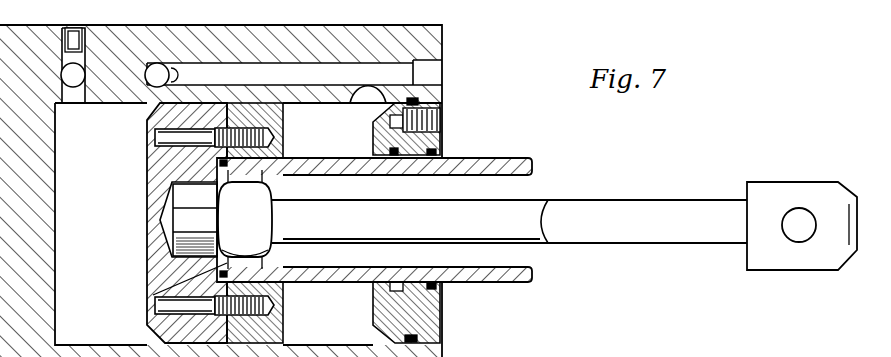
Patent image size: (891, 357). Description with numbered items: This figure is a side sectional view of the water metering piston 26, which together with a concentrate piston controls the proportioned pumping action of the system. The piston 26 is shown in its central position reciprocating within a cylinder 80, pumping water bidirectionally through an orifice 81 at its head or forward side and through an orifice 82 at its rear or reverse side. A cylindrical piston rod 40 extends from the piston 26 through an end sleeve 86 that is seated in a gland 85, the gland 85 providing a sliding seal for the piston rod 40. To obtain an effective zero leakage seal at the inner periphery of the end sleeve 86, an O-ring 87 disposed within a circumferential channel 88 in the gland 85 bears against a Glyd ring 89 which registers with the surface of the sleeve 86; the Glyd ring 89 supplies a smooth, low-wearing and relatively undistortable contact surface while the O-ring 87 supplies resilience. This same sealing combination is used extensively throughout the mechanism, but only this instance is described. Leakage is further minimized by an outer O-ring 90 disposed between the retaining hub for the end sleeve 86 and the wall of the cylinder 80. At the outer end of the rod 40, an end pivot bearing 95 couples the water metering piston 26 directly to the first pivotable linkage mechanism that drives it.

The water metering piston 26 is at (305, 137).
The piston rod 40 is at (564, 207).
The cylinder 80 is at (327, 100).
The orifice 81 is at (74, 100).
The orifice 82 is at (150, 100).
The gland 85 is at (442, 115).
The end sleeve 86 is at (532, 158).
The O-ring 87 is at (398, 147).
The circumferential channel 88 is at (373, 143).
The Glyd ring 89 is at (432, 154).
The outer O-ring 90 is at (418, 100).
The end pivot bearing 95 is at (805, 208).